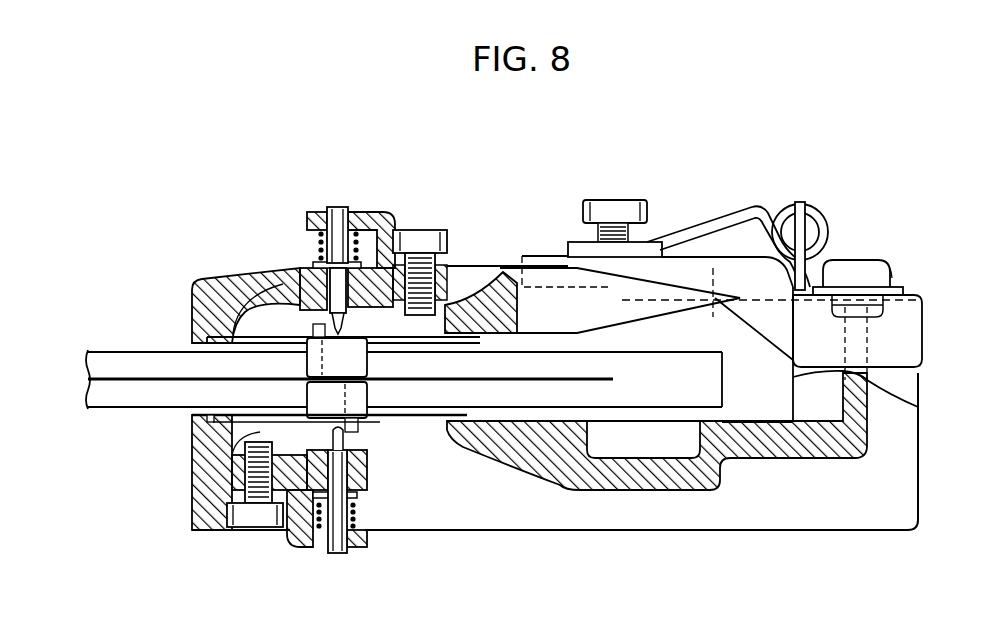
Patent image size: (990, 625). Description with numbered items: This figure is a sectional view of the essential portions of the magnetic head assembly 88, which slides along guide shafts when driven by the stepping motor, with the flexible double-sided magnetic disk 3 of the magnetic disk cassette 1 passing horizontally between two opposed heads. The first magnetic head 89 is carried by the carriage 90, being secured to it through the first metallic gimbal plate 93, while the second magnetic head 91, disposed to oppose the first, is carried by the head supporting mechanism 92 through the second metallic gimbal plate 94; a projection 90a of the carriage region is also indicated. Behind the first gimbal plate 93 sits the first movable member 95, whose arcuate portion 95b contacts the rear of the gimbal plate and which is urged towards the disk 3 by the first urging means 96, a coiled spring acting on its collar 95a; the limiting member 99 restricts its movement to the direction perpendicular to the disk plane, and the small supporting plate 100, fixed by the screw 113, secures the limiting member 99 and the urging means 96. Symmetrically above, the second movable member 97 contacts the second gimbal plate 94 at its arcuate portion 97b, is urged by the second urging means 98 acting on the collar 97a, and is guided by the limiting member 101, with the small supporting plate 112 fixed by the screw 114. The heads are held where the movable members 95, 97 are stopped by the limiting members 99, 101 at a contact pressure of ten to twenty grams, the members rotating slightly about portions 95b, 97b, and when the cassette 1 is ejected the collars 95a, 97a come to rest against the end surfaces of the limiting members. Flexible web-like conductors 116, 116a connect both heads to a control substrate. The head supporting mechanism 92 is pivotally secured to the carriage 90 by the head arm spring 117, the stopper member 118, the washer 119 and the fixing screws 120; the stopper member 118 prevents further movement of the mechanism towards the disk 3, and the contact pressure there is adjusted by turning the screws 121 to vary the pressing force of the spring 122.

The magnetic disk cassette 1 is at (107, 352).
The magnetic disk 3 is at (128, 378).
The magnetic head assembly 88 is at (934, 609).
The first magnetic head 89 is at (305, 387).
The carriage 90 is at (197, 517).
The housing projection 90a is at (208, 420).
The second magnetic head 91 is at (312, 377).
The head supporting mechanism 92 is at (208, 288).
The first gimbal plate 93 is at (232, 447).
The second gimbal plate 94 is at (257, 307).
The first movable member 95 is at (340, 553).
The collar 95a is at (303, 522).
The arcuate portion 95b is at (362, 465).
The first urging means 96 is at (363, 527).
The second movable member 97 is at (337, 207).
The collar 97a is at (313, 258).
The arcuate portion 97b is at (345, 333).
The second urging means 98 is at (317, 250).
The limiting member 99 is at (358, 513).
The small supporting plate 100 is at (305, 547).
The limiting member 101 is at (310, 287).
The small supporting plate 112 is at (378, 220).
The screw 113 is at (243, 520).
The screw 114 is at (432, 232).
The flexible web-like conductor 116 is at (440, 447).
The flexible web-like conductor 116a is at (437, 317).
The head arm spring 117 is at (732, 308).
The stopper member 118 is at (910, 342).
The washer 119 is at (897, 288).
The fixing screw 120 is at (857, 265).
The screw 121 is at (607, 205).
The spring 122 is at (747, 208).